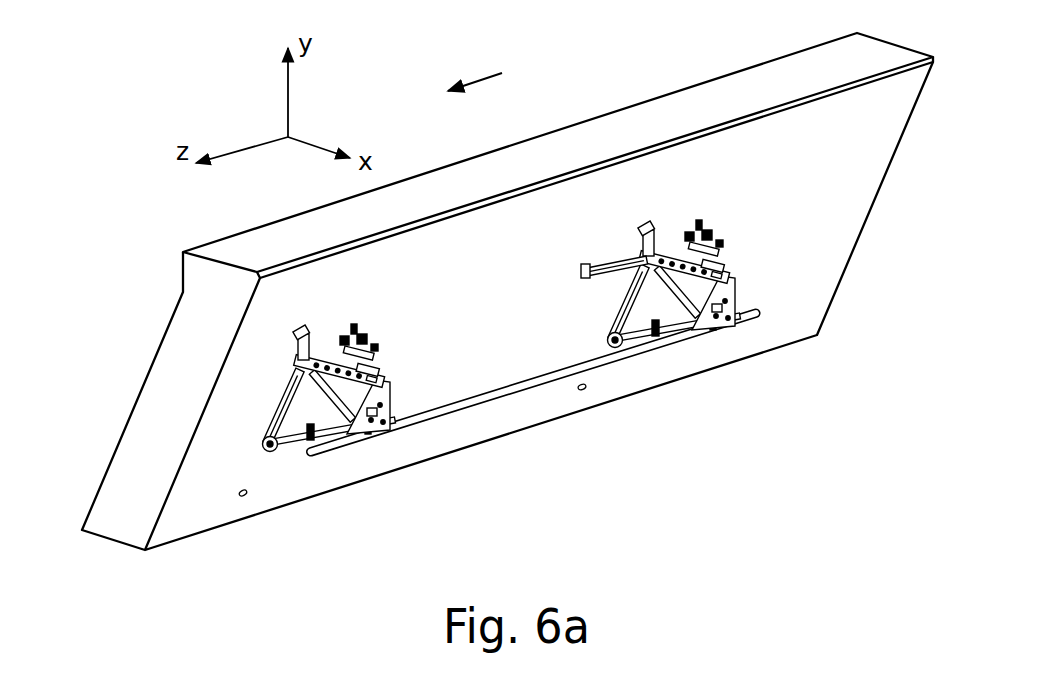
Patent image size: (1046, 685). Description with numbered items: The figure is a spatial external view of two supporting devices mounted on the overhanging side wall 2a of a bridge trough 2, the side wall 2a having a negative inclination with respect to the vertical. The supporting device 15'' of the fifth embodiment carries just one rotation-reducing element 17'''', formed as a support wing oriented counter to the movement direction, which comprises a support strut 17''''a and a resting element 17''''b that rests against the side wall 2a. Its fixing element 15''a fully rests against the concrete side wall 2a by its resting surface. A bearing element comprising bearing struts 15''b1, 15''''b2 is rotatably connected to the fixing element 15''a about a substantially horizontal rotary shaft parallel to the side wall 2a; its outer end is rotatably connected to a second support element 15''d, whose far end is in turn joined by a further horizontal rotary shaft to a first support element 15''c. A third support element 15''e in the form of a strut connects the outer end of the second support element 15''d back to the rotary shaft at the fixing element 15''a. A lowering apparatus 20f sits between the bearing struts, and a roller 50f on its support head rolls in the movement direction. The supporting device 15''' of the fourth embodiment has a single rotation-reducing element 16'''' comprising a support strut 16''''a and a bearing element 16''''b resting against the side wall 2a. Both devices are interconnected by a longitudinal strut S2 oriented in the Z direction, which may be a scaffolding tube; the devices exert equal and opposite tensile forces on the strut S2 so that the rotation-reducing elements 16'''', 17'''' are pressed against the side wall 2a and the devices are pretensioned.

The bridge trough 2 is at (590, 143).
The side wall 2a is at (831, 175).
The longitudinal strut S2 is at (523, 395).
The supporting device 15'' is at (294, 407).
The supporting device 15''' is at (610, 326).
The fixing element 15''a is at (220, 406).
The bearing strut 15''b1 is at (226, 363).
The first support element 15''c is at (326, 458).
The second support element 15''d is at (420, 398).
The third support element 15''e is at (209, 396).
The bearing strut 15''''b2 is at (441, 354).
The rotation-reducing element 16'''' is at (598, 305).
The support strut 16''''a is at (596, 237).
The bearing element 16''''b is at (535, 252).
The rotation-reducing element 17'''' is at (386, 314).
The support strut 17''''a is at (385, 307).
The resting element 17''''b is at (421, 319).
The lowering apparatus 20f is at (239, 461).
The roller 50f is at (244, 334).